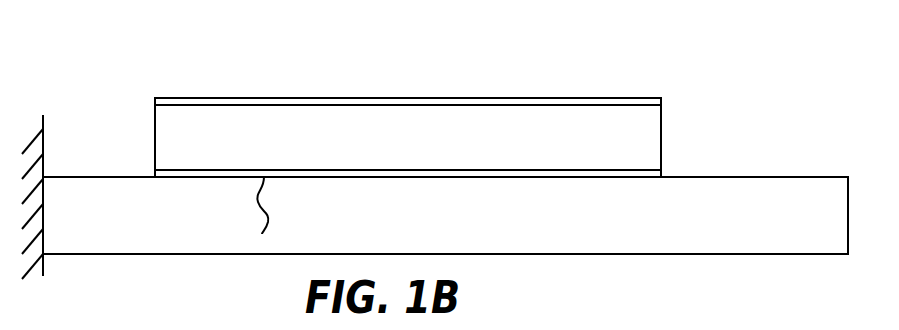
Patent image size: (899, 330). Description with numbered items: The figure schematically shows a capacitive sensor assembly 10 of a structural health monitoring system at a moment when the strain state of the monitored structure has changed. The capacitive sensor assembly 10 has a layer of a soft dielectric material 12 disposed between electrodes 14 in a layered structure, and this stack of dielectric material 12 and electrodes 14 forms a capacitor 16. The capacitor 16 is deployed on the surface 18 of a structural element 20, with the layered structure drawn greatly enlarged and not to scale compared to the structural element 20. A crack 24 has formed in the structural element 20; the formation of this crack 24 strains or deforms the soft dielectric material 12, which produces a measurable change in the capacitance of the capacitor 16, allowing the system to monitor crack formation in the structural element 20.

The capacitive sensor assembly 10 is at (609, 70).
The soft dielectric material 12 is at (480, 148).
The electrodes 14 is at (423, 98).
The capacitor 16 is at (675, 100).
The surface 18 is at (108, 177).
The structural element 20 is at (655, 220).
The crack 24 is at (258, 203).